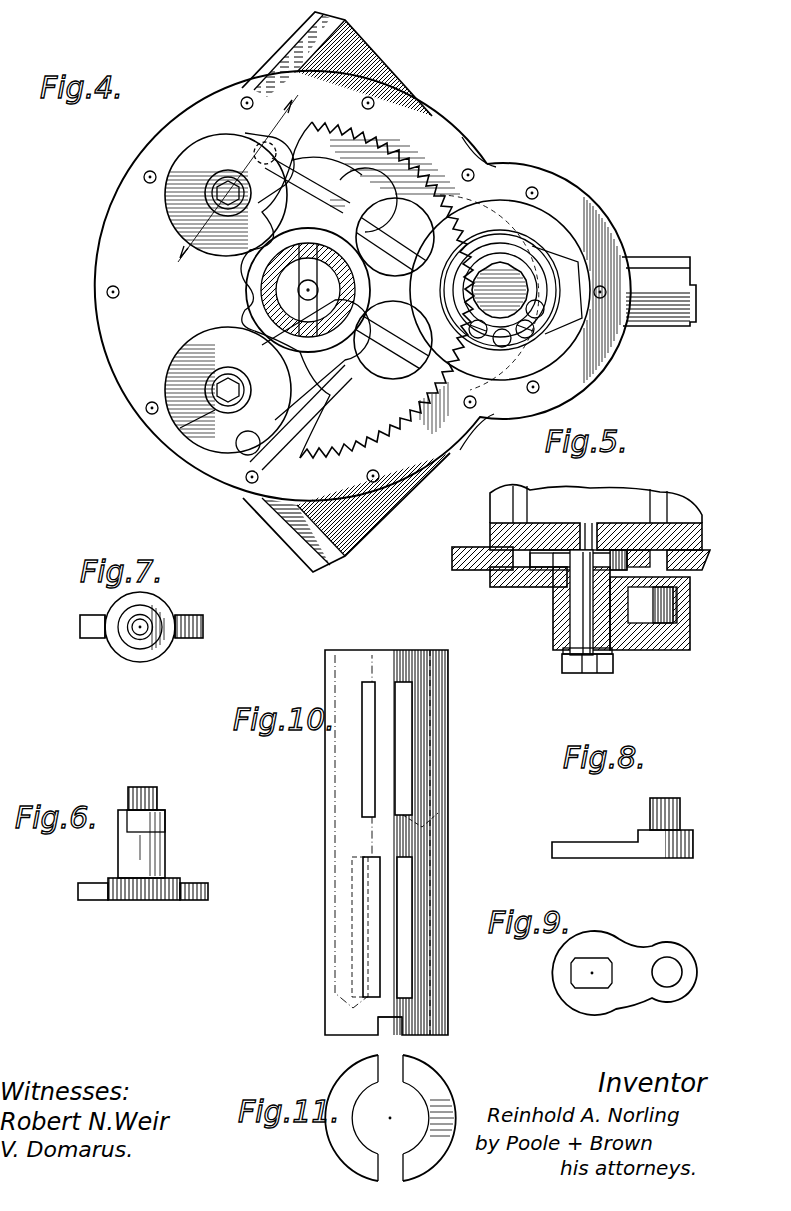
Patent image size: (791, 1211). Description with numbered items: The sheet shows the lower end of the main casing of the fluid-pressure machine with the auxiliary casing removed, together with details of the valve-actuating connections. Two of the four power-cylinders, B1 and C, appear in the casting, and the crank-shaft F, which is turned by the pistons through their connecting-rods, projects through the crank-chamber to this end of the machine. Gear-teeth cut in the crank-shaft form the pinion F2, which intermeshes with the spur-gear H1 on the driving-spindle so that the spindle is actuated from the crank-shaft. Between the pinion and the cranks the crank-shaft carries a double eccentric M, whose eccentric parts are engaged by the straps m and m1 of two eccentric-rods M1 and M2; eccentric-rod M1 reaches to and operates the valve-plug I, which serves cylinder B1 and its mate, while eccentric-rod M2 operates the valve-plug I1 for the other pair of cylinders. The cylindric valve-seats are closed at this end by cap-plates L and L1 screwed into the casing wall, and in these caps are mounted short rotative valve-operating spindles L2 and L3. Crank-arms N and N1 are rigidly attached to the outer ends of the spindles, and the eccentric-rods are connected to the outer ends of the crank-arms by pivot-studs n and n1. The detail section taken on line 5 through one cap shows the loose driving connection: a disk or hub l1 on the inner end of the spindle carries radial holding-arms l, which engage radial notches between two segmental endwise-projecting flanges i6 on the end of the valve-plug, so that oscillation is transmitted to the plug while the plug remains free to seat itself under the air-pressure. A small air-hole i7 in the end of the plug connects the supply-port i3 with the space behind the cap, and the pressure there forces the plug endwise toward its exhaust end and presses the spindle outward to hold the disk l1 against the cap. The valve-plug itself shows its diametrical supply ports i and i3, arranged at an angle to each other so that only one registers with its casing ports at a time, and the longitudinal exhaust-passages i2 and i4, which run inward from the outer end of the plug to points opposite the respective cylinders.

In FIG. 4, the power-cylinder C is at (365, 66).
In FIG. 4, the power-cylinder B1 is at (362, 520).
In FIG. 4, the crank-shaft F is at (563, 277).
In FIG. 4, the pinion F2 is at (505, 262).
In FIG. 4, the double eccentric M is at (527, 267).
In FIG. 4, the strap m1 is at (485, 237).
In FIG. 4, the strap m is at (495, 357).
In FIG. 4, the eccentric-rod M1 is at (384, 358).
In FIG. 4, the eccentric-rod M2 is at (385, 240).
In FIG. 4, the spur-gear H1 is at (403, 150).
In FIG. 4, the cap-plate L is at (267, 385).
In FIG. 4, the cap-plate L1 is at (257, 194).
In FIG. 5, the cap-plate L1 is at (530, 580).
In FIG. 4, the valve-operating spindle L2 is at (210, 412).
In FIG. 4, the valve-operating spindle L3 is at (220, 187).
In FIG. 5, the valve-operating spindle L3 is at (580, 612).
In FIG. 7, the valve-operating spindle L3 is at (160, 614).
In FIG. 6, the valve-operating spindle L3 is at (160, 833).
In FIG. 4, the crank-arm N is at (247, 407).
In FIG. 4, the crank-arm N1 is at (252, 190).
In FIG. 5, the crank-arm N1 is at (640, 637).
In FIG. 8, the crank-arm N1 is at (665, 858).
In FIG. 9, the crank-arm N1 is at (640, 992).
In FIG. 4, the pivot-stud n is at (245, 450).
In FIG. 4, the pivot-stud n1 is at (256, 150).
In FIG. 5, the pivot-stud n1 is at (672, 605).
In FIG. 8, the pivot-stud n1 is at (676, 812).
In FIG. 9, the pivot-stud n1 is at (667, 972).
In FIG. 4, the section line 5 is at (232, 181).
In FIG. 5, the valve-plug I is at (540, 556).
In FIG. 10, the valve-plug I is at (438, 770).
In FIG. 5, the valve-plug I1 is at (580, 560).
In FIG. 10, the supply port i is at (368, 752).
In FIG. 10, the exhaust-passage i2 is at (405, 730).
In FIG. 10, the supply port i3 is at (405, 931).
In FIG. 10, the exhaust-passage i4 is at (372, 932).
In FIG. 10, the segmental flange i6 is at (330, 1020).
In FIG. 11, the segmental flange i6 is at (352, 1082).
In FIG. 5, the air-hole i7 is at (600, 552).
In FIG. 7, the holding-arm l is at (92, 632).
In FIG. 6, the holding-arm l is at (90, 890).
In FIG. 7, the disk l1 is at (150, 658).
In FIG. 6, the disk l1 is at (142, 900).